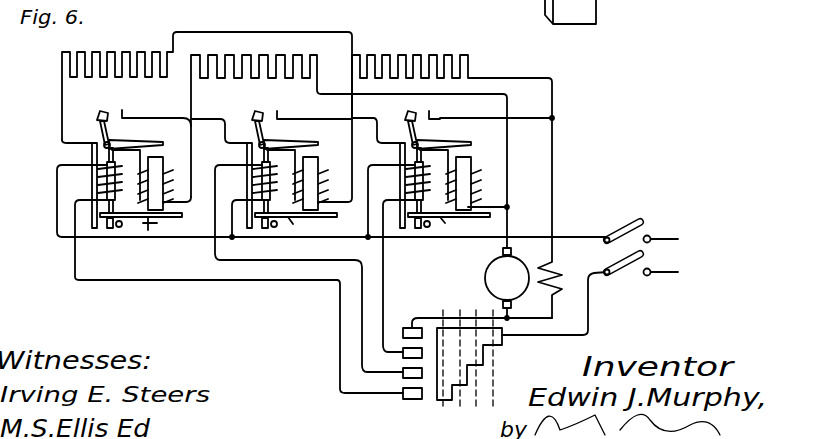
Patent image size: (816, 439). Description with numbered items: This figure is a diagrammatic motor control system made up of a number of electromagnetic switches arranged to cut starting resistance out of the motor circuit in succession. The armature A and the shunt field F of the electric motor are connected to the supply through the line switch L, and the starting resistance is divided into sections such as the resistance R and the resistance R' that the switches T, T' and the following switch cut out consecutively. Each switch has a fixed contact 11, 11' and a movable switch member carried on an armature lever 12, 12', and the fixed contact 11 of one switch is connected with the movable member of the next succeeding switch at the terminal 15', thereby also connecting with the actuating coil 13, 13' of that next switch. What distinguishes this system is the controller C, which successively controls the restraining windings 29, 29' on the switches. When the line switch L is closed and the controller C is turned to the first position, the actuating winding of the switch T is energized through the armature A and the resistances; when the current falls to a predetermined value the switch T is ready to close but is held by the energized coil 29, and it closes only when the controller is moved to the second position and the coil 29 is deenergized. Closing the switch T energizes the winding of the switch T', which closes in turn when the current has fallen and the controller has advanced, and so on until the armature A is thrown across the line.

The resistance R is at (207, 116).
The resistance R' is at (349, 146).
The fixed contact 11 is at (137, 109).
The fixed contact 11' is at (293, 109).
The armature lever 12 is at (93, 123).
The armature lever 12' is at (247, 123).
The terminal 15' is at (287, 161).
The magnet coil 13 is at (161, 182).
The magnet coil 13' is at (319, 182).
The winding 29 is at (230, 270).
The winding 29' is at (309, 260).
The switch T is at (150, 225).
The switch T' is at (298, 226).
The armature A is at (507, 277).
The shunt field F is at (557, 277).
The line switch L is at (637, 220).
The controller C is at (452, 366).